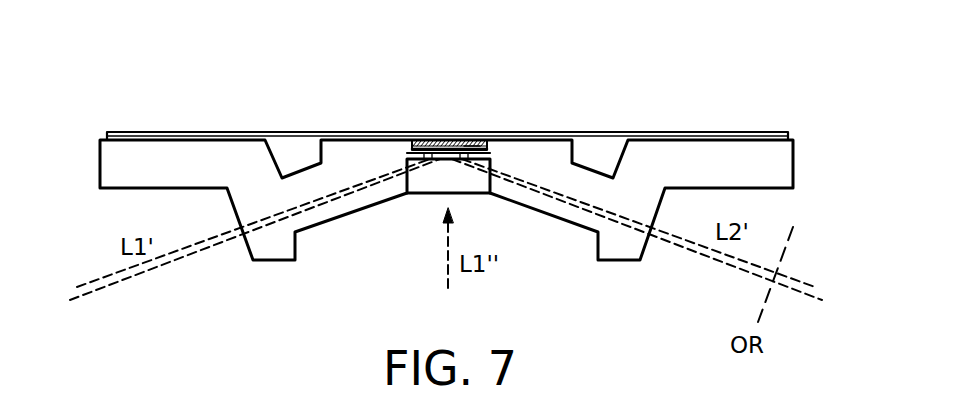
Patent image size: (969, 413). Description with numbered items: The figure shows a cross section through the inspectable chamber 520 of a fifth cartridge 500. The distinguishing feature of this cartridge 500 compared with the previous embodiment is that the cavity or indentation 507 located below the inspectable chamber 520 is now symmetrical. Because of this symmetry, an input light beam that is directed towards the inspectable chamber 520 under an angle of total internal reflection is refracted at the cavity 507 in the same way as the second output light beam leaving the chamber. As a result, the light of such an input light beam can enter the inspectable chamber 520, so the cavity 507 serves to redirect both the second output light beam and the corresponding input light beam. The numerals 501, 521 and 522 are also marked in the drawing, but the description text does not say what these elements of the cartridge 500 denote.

The fifth cartridge 500 is at (690, 123).
The cover plate 501 is at (175, 153).
The cavity or indentation 507 is at (425, 183).
The inspectable chamber 520 is at (448, 148).
The light receiving surface 521 is at (472, 144).
The optical filter 522 is at (420, 140).